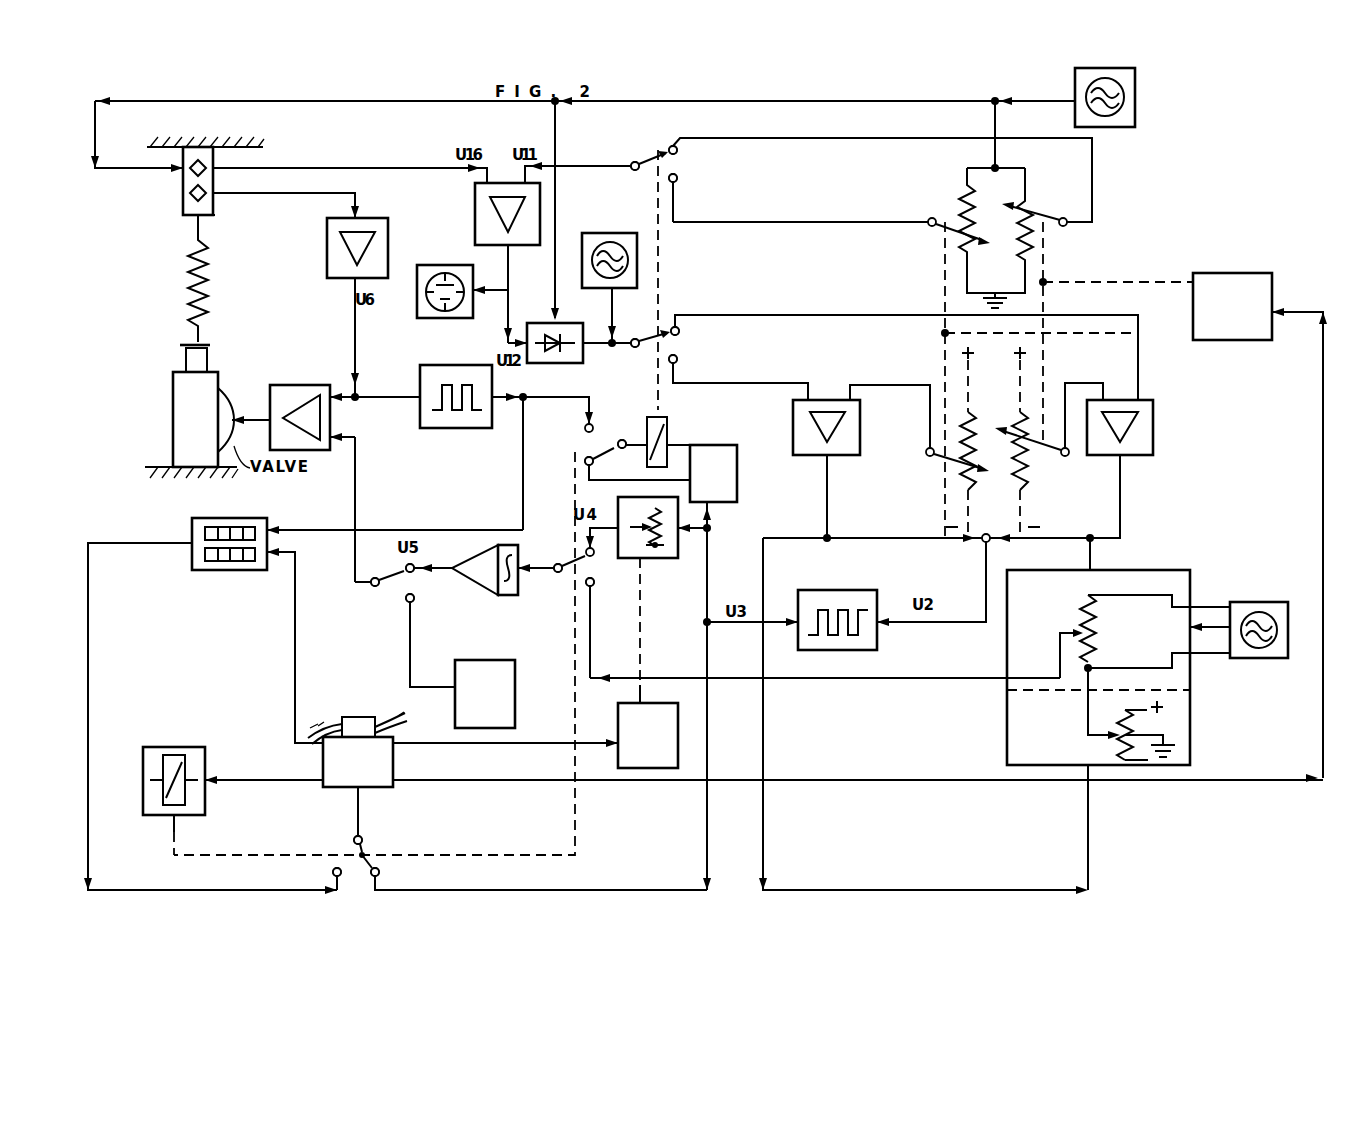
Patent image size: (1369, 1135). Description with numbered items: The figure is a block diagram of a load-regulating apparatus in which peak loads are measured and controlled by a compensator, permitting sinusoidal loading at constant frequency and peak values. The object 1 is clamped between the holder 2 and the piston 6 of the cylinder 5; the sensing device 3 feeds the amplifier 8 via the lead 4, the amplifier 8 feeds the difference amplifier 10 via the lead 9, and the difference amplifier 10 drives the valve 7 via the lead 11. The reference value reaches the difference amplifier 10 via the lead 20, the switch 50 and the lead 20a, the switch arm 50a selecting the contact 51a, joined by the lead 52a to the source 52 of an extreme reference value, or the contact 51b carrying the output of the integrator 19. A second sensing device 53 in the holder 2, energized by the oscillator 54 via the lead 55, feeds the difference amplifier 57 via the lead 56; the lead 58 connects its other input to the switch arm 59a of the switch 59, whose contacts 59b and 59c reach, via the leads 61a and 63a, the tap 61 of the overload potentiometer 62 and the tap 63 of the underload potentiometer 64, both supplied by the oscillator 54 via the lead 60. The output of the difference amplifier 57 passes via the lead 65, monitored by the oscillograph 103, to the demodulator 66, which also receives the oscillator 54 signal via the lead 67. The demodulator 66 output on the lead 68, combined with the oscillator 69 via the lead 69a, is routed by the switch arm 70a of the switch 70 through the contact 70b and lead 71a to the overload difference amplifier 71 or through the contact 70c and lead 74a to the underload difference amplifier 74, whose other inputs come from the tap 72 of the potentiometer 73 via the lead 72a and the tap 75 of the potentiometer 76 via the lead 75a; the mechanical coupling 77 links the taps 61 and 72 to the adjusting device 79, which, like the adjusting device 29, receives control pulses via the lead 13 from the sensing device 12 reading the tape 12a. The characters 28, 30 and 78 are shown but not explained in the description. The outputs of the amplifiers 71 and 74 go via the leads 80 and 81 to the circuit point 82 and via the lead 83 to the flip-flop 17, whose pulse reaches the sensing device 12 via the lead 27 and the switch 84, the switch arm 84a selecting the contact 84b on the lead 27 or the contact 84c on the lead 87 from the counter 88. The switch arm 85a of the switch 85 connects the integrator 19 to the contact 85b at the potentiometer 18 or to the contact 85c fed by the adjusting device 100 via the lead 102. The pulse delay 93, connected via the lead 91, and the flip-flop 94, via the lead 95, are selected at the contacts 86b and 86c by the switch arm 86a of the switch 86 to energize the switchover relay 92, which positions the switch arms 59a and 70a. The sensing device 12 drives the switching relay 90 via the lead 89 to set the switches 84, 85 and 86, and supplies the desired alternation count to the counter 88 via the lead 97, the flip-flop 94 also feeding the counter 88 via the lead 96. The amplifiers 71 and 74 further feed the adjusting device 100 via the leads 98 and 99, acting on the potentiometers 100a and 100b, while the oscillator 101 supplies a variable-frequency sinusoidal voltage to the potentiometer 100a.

The spring 1 is at (207, 246).
The sensing device output 2 is at (213, 215).
The sensing device 3 is at (183, 202).
The sensing device output 4 is at (250, 196).
The cylinder 5 is at (173, 397).
The piston head 6 is at (180, 355).
The valve 7 is at (220, 398).
The amplifier 8 is at (336, 278).
The junction 9 is at (352, 375).
The difference amplifier 10 is at (318, 352).
The valve control line 11 is at (260, 418).
The sensing device 12 is at (380, 737).
The tape 12a is at (372, 700).
The line 13 is at (707, 770).
The flip flop 17 is at (877, 590).
The potentiometer 18 is at (618, 500).
The integrator 19 is at (478, 516).
The amplifier 20 is at (444, 564).
The line 20a is at (357, 452).
The line 27 is at (707, 812).
The adjusting device input 28 is at (618, 740).
The adjusting device 29 is at (618, 751).
The line 30 is at (640, 692).
The switch 50 is at (445, 599).
The switch contact 50a is at (385, 568).
The switch contact 51a is at (406, 564).
The switch contact 51b is at (406, 596).
The source 52 is at (502, 660).
The source line 52a is at (410, 644).
The sensing device 53 is at (213, 168).
The oscillator 54 is at (1135, 90).
The line 55 is at (848, 106).
The line 56 is at (402, 174).
The difference amplifier 57 is at (500, 183).
The line 58 is at (600, 164).
The switch 59 is at (708, 175).
The switch contact 59a is at (640, 162).
The switch contact 59b is at (670, 147).
The switch contact 59c is at (676, 182).
The line 60 is at (995, 118).
The wiper 61 is at (1050, 220).
The line 61a is at (878, 138).
The overload potentiometer 62 is at (1034, 193).
The wiper 63 is at (944, 208).
The line 63a is at (810, 222).
The underload potentiometer 64 is at (960, 214).
The line 65 is at (508, 322).
The demodulator 66 is at (528, 335).
The line 67 is at (555, 204).
The line 68 is at (614, 347).
The oscillator 69 is at (637, 240).
The line 69a is at (610, 300).
The switch 70 is at (708, 364).
The switch contact 70a is at (635, 338).
The switch contact 70b is at (678, 333).
The switch contact 70c is at (669, 361).
The overload difference amplifier 71 is at (1153, 415).
The line 71a is at (780, 317).
The wiper 72 is at (1063, 456).
The line 72a is at (1076, 386).
The potentiometer 73 is at (972, 478).
The underload difference amplifier 74 is at (828, 400).
The line 74a is at (700, 383).
The wiper 75 is at (929, 458).
The line 75a is at (930, 402).
The potentiometer 76 is at (1022, 462).
The line 77 is at (1072, 284).
The line 78 is at (1075, 335).
The adjusting device 79 is at (1232, 273).
The line 80 is at (1120, 520).
The line 81 is at (828, 488).
The switch contact 82 is at (998, 524).
The line 83 is at (986, 560).
The switch 84 is at (365, 909).
The switch contact 84a is at (363, 842).
The switch contact 84b is at (379, 872).
The switch contact 84c is at (333, 872).
The switch 85 is at (565, 599).
The switch contact 85a is at (563, 564).
The switch contact 85b is at (608, 580).
The switch contact 85c is at (590, 586).
The switch 86 is at (565, 446).
The switch contact 86a is at (620, 440).
The switch contact 86b is at (594, 463).
The switch contact 86c is at (584, 424).
The line 87 is at (157, 890).
The counter 88 is at (192, 518).
The line 89 is at (234, 778).
The switching relay 90 is at (193, 748).
The line 91 is at (709, 528).
The relay 92 is at (667, 440).
The pulse delay 93 is at (737, 490).
The flip flop 94 is at (452, 352).
The line 95 is at (550, 396).
The line 96 is at (291, 531).
The line 97 is at (295, 575).
The line 98 is at (1088, 554).
The line 99 is at (752, 622).
The adjusting device 100 is at (1100, 765).
The potentiometer 100a is at (1137, 586).
The potentiometer 100b is at (1136, 730).
The oscillator 101 is at (1240, 602).
The line 102 is at (820, 678).
The oscillograph 103 is at (432, 265).